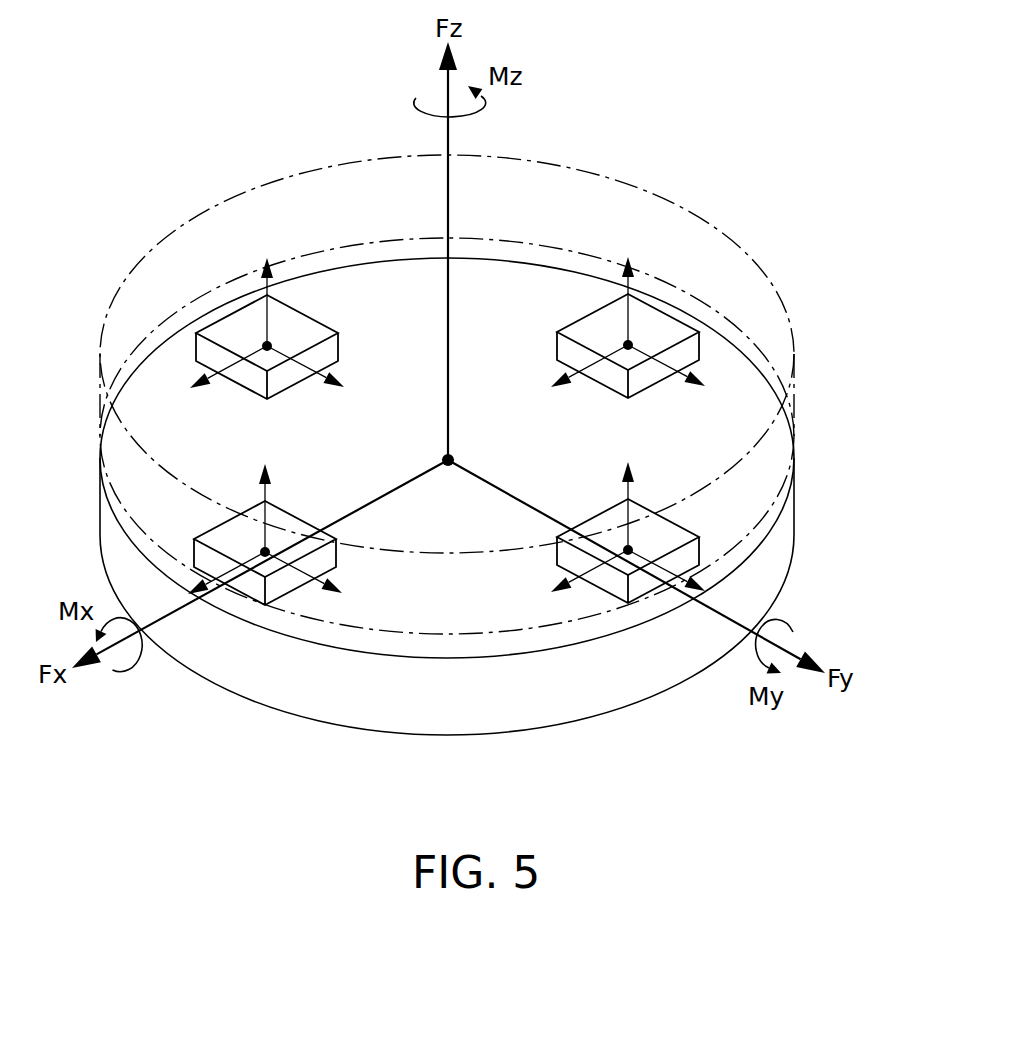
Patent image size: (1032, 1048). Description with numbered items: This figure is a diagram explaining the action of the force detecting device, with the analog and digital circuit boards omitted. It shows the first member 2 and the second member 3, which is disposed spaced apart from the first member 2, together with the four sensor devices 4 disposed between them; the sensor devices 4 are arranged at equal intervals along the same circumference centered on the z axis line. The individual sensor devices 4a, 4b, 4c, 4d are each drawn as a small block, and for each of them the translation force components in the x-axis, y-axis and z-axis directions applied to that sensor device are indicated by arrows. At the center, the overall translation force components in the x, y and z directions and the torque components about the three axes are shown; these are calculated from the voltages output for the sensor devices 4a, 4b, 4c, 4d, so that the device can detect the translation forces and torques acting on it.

The first member 2 is at (637, 705).
The second member 3 is at (633, 185).
The sensor devices 4 is at (472, 381).
The sensor device 4a is at (222, 523).
The sensor device 4b is at (227, 313).
The sensor device 4c is at (673, 310).
The sensor device 4d is at (677, 523).